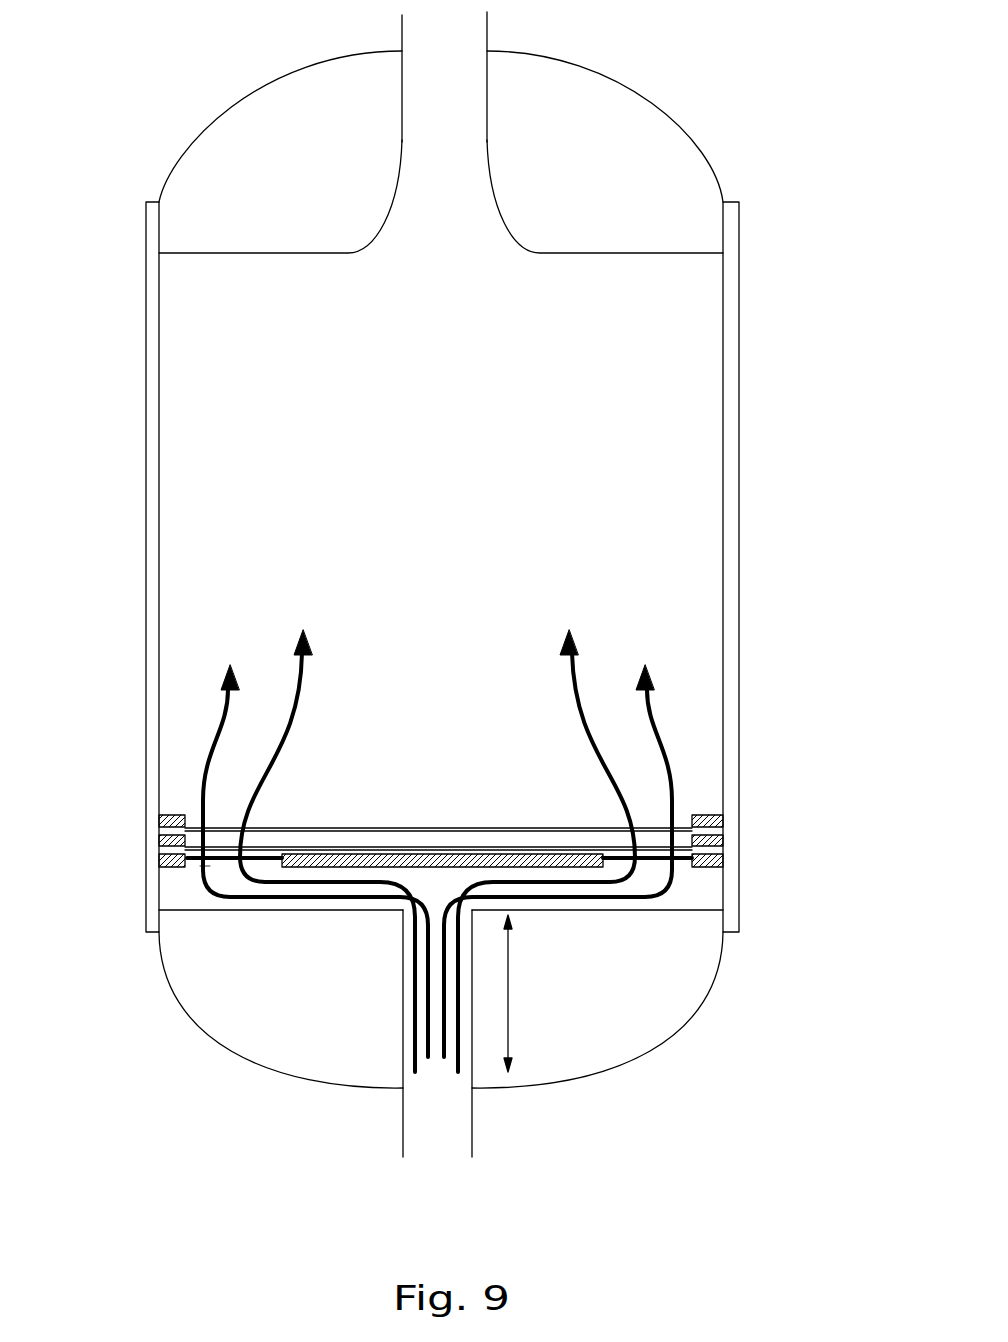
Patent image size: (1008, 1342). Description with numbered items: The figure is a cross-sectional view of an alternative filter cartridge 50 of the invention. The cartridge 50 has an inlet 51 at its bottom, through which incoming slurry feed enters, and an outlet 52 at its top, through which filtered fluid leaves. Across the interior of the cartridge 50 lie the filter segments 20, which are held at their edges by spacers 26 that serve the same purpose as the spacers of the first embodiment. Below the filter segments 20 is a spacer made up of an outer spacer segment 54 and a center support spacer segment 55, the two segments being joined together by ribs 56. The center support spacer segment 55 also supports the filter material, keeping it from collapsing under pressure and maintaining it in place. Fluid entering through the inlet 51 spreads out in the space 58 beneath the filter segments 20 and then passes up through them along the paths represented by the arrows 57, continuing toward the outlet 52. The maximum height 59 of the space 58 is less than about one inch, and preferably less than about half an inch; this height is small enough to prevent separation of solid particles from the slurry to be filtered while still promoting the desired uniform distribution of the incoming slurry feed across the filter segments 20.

The filter segments 20 is at (362, 848).
The spacers 26 is at (163, 840).
The filter cartridge 50 is at (752, 310).
The inlet 51 is at (403, 1130).
The outlet 52 is at (488, 42).
The spacer segment 54 is at (172, 867).
The spacer segment 55 is at (458, 857).
The ribs 56 is at (207, 868).
The arrows 57 is at (640, 703).
The space 58 is at (610, 1037).
The maximum height 59 is at (508, 998).